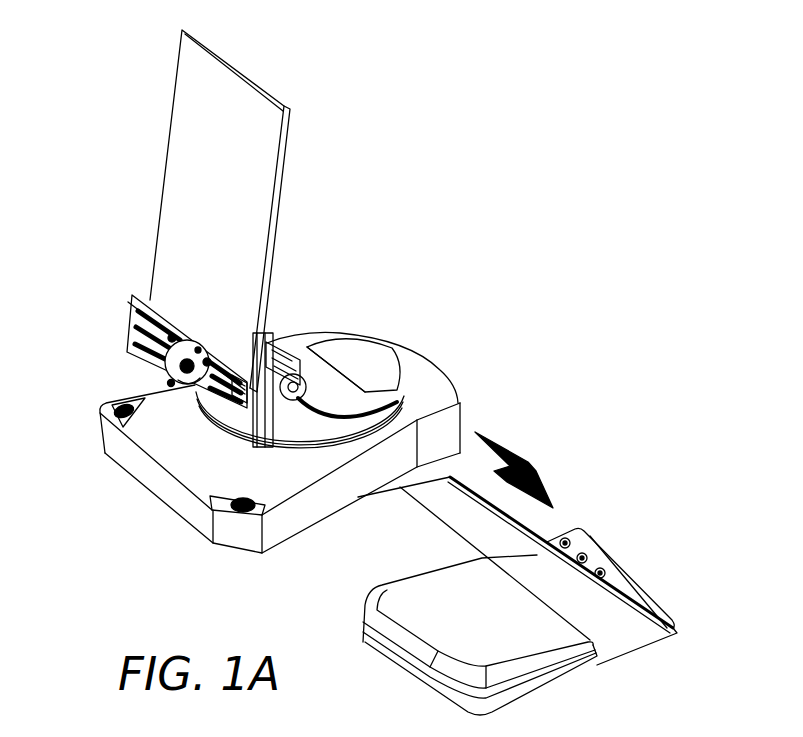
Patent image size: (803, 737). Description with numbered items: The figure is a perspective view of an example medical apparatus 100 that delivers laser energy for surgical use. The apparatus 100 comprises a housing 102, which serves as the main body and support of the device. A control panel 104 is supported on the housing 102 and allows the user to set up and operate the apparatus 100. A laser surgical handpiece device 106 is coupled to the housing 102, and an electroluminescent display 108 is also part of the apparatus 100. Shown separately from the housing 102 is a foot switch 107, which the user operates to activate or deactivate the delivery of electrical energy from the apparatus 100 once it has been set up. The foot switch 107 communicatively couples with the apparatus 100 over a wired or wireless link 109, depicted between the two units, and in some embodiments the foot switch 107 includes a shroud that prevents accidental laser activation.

The medical apparatus 100 is at (528, 106).
The housing 102 is at (213, 466).
The control panel 104 is at (130, 323).
The laser surgical handpiece device 106 is at (280, 373).
The foot switch 107 is at (597, 537).
The electroluminescent display 108 is at (233, 203).
The wired or wireless link 109 is at (523, 467).